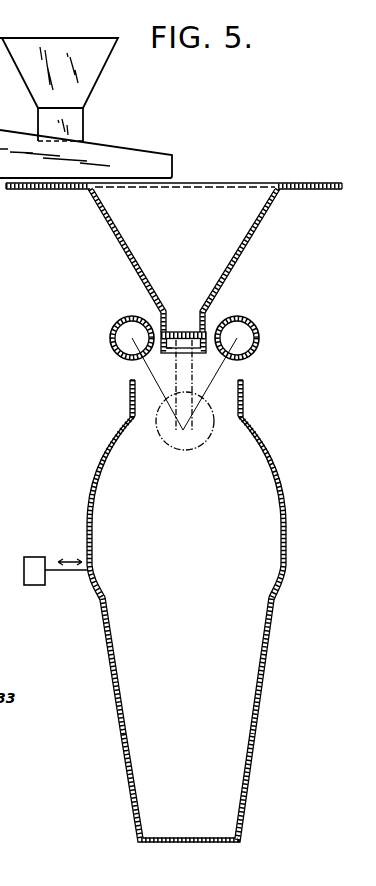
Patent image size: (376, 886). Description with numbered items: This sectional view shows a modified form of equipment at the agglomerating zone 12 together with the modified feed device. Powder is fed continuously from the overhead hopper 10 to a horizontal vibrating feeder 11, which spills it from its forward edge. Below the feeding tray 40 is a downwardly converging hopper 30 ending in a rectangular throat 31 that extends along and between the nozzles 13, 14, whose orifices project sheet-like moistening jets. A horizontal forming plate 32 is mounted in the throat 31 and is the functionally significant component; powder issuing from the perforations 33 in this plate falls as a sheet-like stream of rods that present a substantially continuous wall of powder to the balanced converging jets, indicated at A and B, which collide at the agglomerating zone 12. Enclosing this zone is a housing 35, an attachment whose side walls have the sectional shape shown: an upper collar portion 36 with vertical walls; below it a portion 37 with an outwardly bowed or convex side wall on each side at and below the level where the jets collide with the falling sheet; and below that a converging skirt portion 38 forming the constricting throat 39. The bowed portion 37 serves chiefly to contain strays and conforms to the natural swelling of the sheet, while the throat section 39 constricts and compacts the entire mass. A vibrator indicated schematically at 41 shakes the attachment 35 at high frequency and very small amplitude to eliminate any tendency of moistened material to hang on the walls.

The overhead hopper 10 is at (104, 71).
The horizontal vibrating feeder 11 is at (145, 153).
The feeding tray 40 is at (30, 190).
The downwardly converging hopper 30 is at (246, 245).
The horizontal forming plate 32 is at (186, 333).
The nozzle 13 is at (112, 325).
The nozzle 14 is at (259, 329).
The rectangular throat 31 is at (170, 348).
The strand A is at (151, 372).
The strand B is at (222, 367).
The agglomerating zone 12 is at (205, 445).
The perforations 33 is at (228, 380).
The upper collar portion 36 is at (243, 407).
The outwardly bowed portion 37 is at (284, 505).
The housing 35 is at (192, 608).
The converging skirt portion 38 is at (262, 694).
The constricting throat 39 is at (230, 763).
The vibrator 41 is at (30, 588).